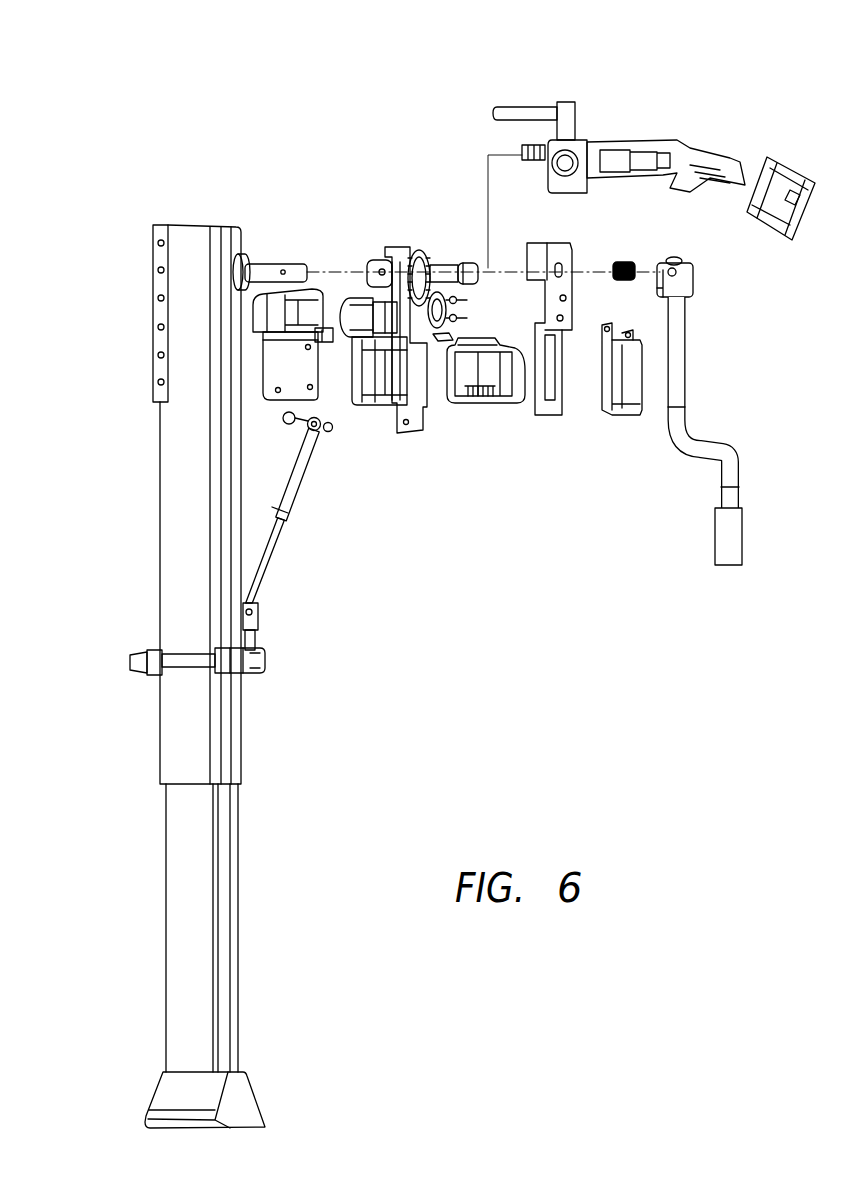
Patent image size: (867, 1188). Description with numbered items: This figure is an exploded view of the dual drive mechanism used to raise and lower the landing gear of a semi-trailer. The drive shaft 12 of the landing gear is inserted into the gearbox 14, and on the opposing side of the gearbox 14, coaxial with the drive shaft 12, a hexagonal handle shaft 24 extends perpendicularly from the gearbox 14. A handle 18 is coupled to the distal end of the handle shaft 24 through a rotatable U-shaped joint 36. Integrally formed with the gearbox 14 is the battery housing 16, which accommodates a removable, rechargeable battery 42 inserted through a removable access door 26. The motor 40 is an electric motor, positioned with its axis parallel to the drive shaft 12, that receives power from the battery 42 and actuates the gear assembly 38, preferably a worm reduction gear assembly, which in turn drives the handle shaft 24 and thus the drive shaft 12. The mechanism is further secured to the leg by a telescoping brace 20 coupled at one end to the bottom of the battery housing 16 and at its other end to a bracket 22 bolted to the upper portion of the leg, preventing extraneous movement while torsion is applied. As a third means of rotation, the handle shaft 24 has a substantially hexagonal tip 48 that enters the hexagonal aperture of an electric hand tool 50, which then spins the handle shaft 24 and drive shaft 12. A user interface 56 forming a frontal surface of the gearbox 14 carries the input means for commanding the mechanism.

The drive shaft 12 is at (260, 265).
The gearbox 14 is at (395, 265).
The battery housing 16 is at (275, 368).
The handle 18 is at (734, 452).
The brace 20 is at (300, 500).
The bracket 22 is at (203, 658).
The handle shaft 24 is at (452, 267).
The removable access door 26 is at (630, 407).
The rotatable U-shaped joint 36 is at (693, 288).
The gear assembly 38 is at (435, 265).
The motor 40 is at (357, 312).
The battery 42 is at (487, 398).
The hexagonal tip 48 is at (470, 268).
The electric hand tool 50 is at (677, 138).
The user interface 56 is at (572, 243).